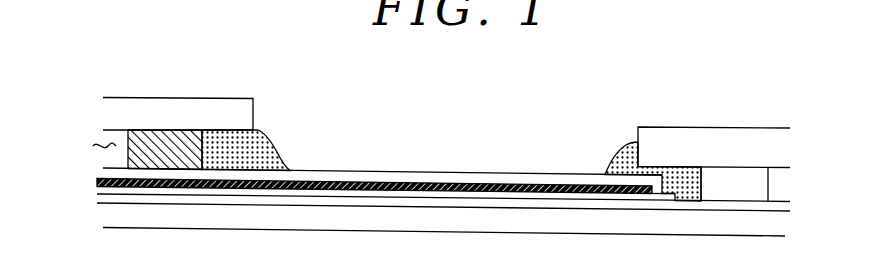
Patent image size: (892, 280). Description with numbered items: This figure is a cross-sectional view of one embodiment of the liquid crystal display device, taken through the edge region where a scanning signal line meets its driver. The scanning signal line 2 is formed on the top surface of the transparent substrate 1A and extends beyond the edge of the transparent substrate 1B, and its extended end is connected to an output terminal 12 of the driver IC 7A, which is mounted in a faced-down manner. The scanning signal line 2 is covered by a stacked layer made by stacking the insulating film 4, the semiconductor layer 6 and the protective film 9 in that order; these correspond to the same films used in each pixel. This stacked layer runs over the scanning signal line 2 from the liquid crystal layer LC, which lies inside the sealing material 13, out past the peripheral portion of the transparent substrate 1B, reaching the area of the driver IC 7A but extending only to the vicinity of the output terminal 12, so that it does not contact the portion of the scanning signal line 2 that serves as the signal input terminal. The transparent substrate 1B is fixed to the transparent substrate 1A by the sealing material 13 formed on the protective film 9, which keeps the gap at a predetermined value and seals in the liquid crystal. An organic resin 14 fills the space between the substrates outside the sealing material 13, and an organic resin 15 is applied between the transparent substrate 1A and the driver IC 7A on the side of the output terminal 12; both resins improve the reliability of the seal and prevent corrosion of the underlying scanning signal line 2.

The transparent substrate 1A is at (237, 220).
The transparent substrate 1B is at (207, 103).
The scanning signal line 2 is at (367, 204).
The insulating film 4 is at (417, 197).
The semiconductor layer 6 is at (378, 184).
The driver IC 7A is at (674, 137).
The protective film 9 is at (349, 172).
The output terminal 12 is at (737, 177).
The sealing material 13 is at (152, 129).
The organic resin 14 is at (273, 134).
The organic resin 15 is at (622, 147).
The liquid crystal layer LC is at (89, 147).